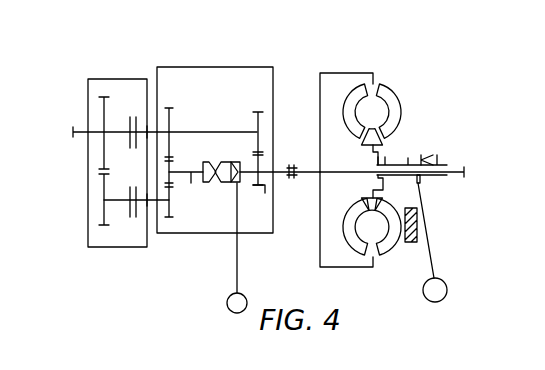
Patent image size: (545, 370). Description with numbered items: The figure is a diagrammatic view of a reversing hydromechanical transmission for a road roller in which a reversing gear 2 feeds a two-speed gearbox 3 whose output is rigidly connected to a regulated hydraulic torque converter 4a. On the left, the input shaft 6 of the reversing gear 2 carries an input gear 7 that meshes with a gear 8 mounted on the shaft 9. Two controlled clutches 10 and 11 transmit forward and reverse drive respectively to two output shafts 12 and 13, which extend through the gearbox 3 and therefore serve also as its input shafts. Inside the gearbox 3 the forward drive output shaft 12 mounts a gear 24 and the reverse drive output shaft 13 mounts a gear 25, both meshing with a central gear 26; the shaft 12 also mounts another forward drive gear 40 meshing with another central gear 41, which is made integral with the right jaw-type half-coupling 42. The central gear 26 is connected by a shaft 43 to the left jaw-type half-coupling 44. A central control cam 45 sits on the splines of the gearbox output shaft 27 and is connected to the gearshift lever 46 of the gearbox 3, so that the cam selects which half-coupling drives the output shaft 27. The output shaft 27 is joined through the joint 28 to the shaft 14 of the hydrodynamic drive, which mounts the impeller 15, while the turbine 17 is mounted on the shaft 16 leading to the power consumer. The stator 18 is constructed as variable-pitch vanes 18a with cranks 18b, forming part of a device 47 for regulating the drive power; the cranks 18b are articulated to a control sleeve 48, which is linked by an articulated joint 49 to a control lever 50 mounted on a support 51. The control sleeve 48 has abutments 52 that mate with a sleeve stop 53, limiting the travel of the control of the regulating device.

The reversing gear 2 is at (86, 213).
The gearbox 3 is at (168, 66).
The regulated hydraulic torque converter 4a is at (389, 254).
The input shaft 6 is at (74, 130).
The input gear 7 is at (104, 103).
The gear 8 is at (104, 190).
The shaft 9 is at (118, 202).
The controlled clutch 10 is at (129, 115).
The controlled clutch 11 is at (129, 220).
The forward drive output shaft 12 is at (150, 130).
The reverse drive output shaft 13 is at (151, 205).
The shaft 14 is at (313, 173).
The impeller 15 is at (393, 108).
The shaft 16 is at (467, 174).
The turbine 17 is at (356, 96).
The stator 18 is at (361, 150).
The variable-pitch vanes 18a is at (373, 127).
The cranks 18b is at (388, 155).
The gear 24 is at (173, 120).
The gear 25 is at (167, 218).
The central gear 26 is at (173, 160).
The gearbox output shaft 27 is at (268, 173).
The universal joint 28 is at (292, 163).
The forward drive gear 40 is at (255, 120).
The central gear 41 is at (265, 190).
The jaw-type half-coupling 42 is at (236, 183).
The shaft 43 is at (191, 184).
The jaw-type half-coupling 44 is at (204, 184).
The central control cam 45 is at (220, 183).
The gearshift lever 46 is at (237, 274).
The device for regulation of the drive power 47 is at (397, 183).
The control sleeve 48 is at (400, 166).
The articulated joint 49 is at (421, 180).
The control lever 50 is at (438, 269).
The support 51 is at (419, 228).
The abutments 52 is at (428, 155).
The sleeve stop 53 is at (440, 155).